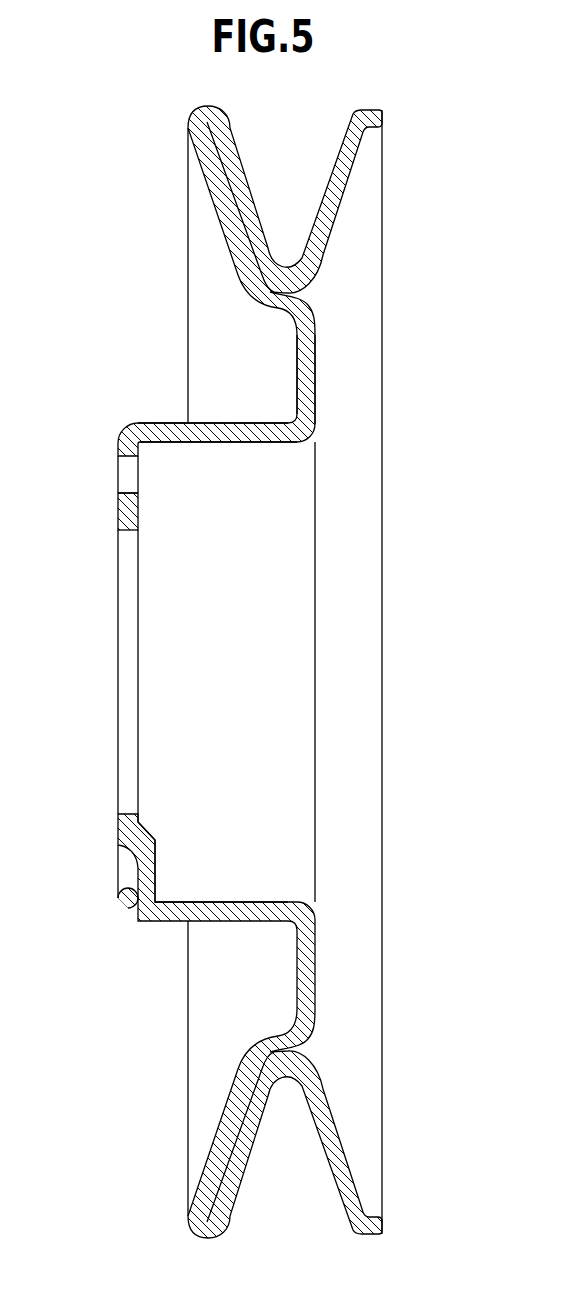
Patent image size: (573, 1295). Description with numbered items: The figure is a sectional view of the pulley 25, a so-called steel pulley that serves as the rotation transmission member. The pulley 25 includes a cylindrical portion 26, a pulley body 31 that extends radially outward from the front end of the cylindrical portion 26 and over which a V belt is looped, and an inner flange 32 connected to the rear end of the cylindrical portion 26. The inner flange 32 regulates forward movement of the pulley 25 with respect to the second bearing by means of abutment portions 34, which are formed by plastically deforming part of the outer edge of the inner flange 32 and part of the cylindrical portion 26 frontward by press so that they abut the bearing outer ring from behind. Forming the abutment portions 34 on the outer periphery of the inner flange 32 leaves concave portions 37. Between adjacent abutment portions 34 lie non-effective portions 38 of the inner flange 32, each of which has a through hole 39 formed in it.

The pulley 25 is at (383, 195).
The pulley body 31 is at (308, 360).
The cylindrical portion 26 is at (170, 426).
The through hole 39 is at (132, 492).
The non-effective portion 38 is at (128, 515).
The inner flange 32 is at (118, 592).
The abutment portion 34 is at (153, 851).
The concave portion 37 is at (116, 895).